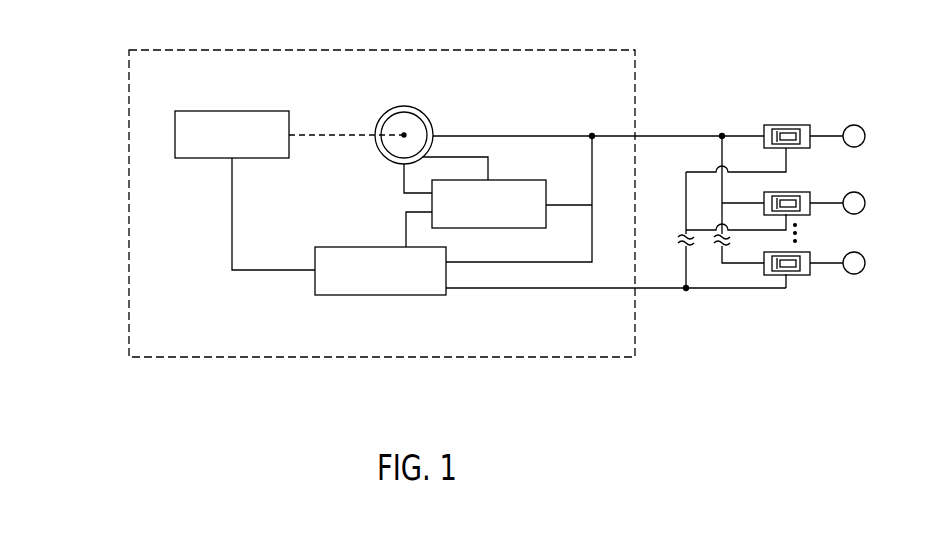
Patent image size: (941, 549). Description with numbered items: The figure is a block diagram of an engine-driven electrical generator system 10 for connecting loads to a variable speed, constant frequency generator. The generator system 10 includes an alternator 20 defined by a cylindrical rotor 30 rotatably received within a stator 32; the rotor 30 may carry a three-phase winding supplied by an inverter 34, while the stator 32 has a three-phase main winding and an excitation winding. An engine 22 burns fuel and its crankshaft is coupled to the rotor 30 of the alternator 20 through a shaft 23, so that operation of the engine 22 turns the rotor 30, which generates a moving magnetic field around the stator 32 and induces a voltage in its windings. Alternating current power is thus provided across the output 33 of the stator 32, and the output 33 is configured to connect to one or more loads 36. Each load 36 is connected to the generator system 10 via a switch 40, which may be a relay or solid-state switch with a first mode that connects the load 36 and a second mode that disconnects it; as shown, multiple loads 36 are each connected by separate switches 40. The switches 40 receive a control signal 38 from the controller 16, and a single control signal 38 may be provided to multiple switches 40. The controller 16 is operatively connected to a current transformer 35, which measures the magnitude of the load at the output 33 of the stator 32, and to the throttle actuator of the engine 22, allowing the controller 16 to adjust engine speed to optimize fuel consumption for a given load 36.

The generator system 10 is at (635, 77).
The controller 16 is at (380, 295).
The alternator 20 is at (405, 118).
The engine 22 is at (233, 111).
The shaft 23 is at (348, 134).
The rotor 30 is at (421, 120).
The stator 32 is at (406, 106).
The output 33 is at (515, 136).
The inverter 34 is at (488, 180).
The current transformer 35 is at (592, 136).
The load 36 is at (854, 125).
The control signal 38 is at (557, 288).
The switch 40 is at (786, 125).